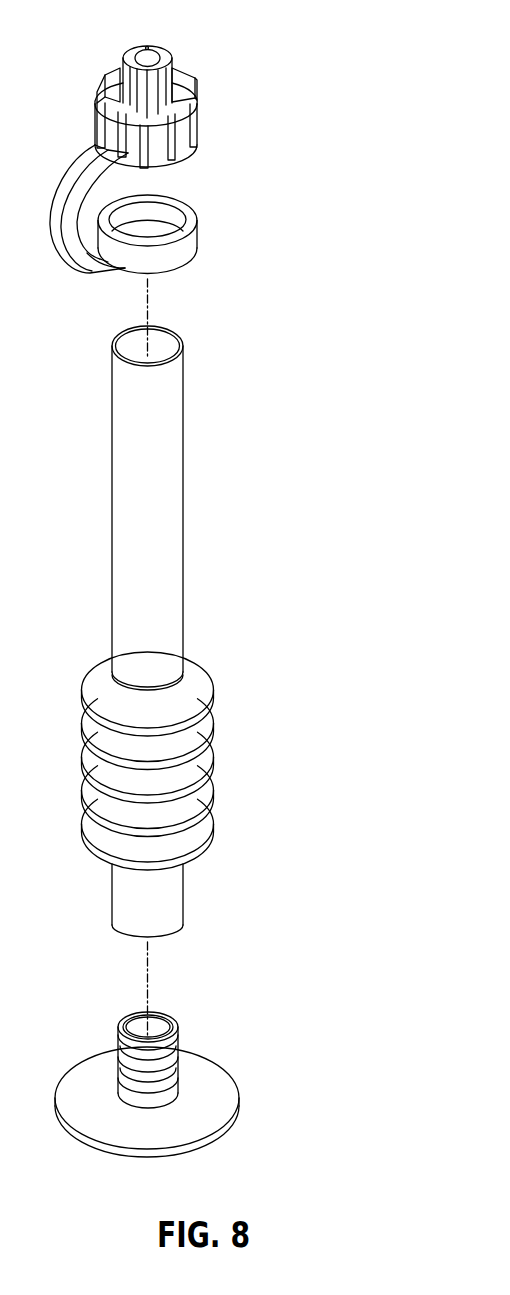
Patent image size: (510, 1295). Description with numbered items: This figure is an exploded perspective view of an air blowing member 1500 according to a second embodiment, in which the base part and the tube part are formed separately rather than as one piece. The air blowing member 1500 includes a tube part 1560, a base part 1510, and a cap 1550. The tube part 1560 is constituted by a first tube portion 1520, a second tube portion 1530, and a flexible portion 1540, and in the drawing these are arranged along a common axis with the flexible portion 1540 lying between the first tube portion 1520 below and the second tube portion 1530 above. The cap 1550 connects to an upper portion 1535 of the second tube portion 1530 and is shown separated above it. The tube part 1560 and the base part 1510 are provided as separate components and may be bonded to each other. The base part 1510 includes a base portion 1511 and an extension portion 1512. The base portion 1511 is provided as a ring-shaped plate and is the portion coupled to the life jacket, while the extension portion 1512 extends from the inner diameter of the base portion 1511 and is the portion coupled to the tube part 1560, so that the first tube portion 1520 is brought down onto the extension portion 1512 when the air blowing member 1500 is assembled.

The air blowing member 1500 is at (247, 28).
The cap 1550 is at (198, 115).
The upper portion 1535 is at (164, 352).
The second tube portion 1530 is at (175, 543).
The flexible portion 1540 is at (203, 755).
The first tube portion 1520 is at (175, 887).
The tube part 1560 is at (313, 531).
The base part 1510 is at (206, 1036).
The base portion 1511 is at (227, 1090).
The extension portion 1512 is at (120, 1020).